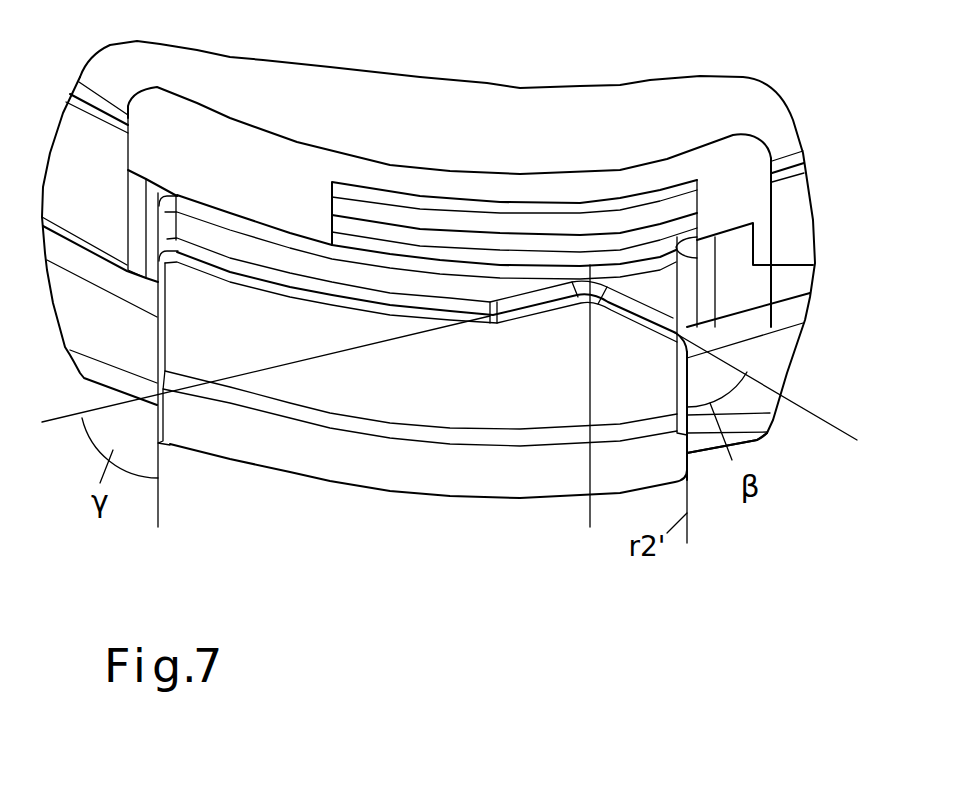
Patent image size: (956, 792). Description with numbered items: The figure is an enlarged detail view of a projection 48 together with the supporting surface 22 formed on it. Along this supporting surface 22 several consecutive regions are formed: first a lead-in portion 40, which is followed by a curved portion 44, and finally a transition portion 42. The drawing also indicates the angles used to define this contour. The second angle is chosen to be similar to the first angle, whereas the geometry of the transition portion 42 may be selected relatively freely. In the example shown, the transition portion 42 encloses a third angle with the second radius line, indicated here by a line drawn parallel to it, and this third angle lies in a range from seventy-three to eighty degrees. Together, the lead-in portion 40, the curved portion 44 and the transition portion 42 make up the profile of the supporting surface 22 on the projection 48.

The supporting surface 22 is at (645, 292).
The lead-in portion 40 is at (641, 256).
The transition portion 42 is at (525, 268).
The curved portion 44 is at (596, 274).
The projection 48 is at (493, 478).